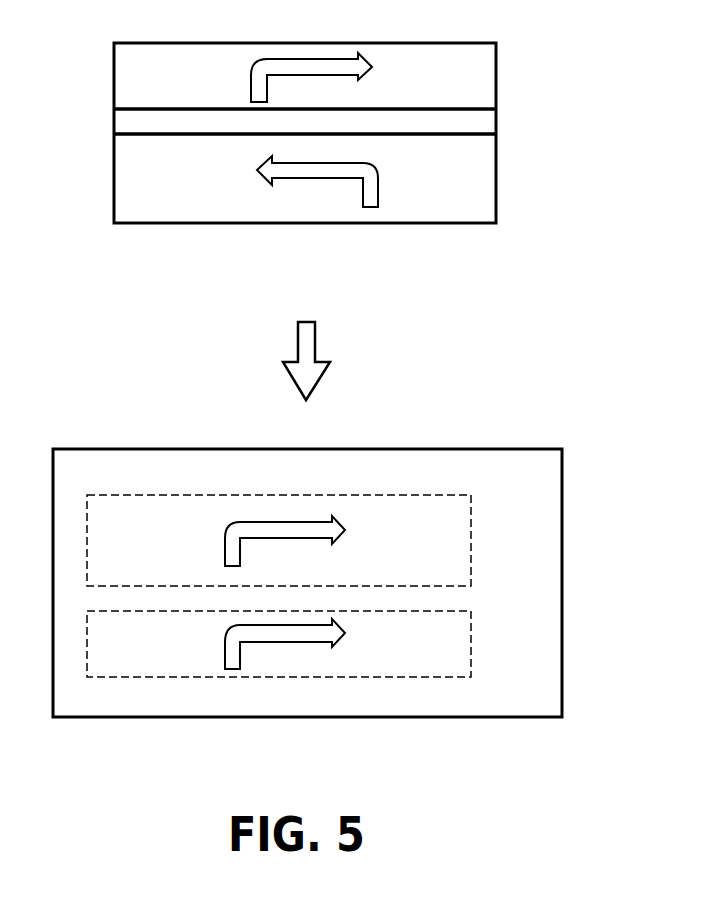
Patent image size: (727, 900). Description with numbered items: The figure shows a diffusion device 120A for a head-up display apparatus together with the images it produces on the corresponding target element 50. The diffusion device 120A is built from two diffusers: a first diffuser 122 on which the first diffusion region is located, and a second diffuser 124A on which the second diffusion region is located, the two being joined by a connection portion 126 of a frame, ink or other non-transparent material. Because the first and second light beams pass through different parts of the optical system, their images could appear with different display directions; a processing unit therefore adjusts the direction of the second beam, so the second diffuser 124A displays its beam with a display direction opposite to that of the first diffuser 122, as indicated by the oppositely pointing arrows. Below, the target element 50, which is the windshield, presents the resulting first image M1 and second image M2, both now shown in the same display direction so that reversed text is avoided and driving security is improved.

The diffusion device 120A is at (608, 288).
The first diffuser 122 is at (470, 80).
The connection portion 126 is at (470, 125).
The second diffuser 124A is at (470, 182).
The target element 50 is at (552, 485).
The second image M2 is at (473, 537).
The first image M1 is at (473, 641).